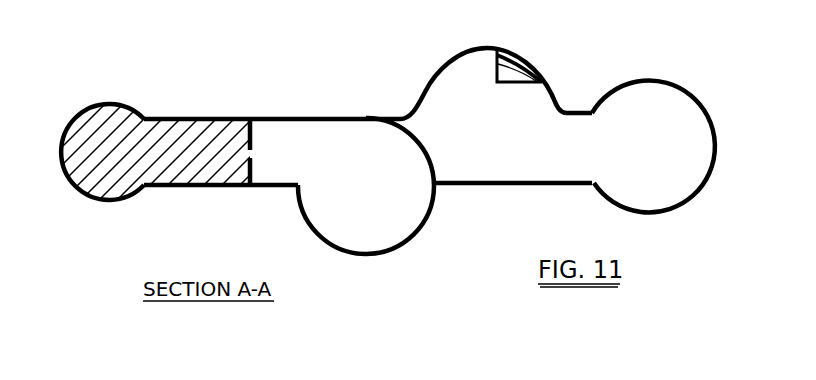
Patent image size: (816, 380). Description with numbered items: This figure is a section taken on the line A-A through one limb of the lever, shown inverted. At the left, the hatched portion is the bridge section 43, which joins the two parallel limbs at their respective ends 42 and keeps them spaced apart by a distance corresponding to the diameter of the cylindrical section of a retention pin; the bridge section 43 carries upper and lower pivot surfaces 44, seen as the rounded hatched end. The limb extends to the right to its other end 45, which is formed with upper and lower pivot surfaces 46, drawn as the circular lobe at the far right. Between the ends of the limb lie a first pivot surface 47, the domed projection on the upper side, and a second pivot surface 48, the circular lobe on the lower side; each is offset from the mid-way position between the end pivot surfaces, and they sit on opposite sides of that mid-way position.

The end 42 is at (248, 119).
The bridge section 43 is at (174, 130).
The pivot surface 44 is at (90, 104).
The other end 45 is at (573, 158).
The pivot surface 46 is at (663, 77).
The first pivot surface 47 is at (450, 82).
The second pivot surface 48 is at (348, 251).